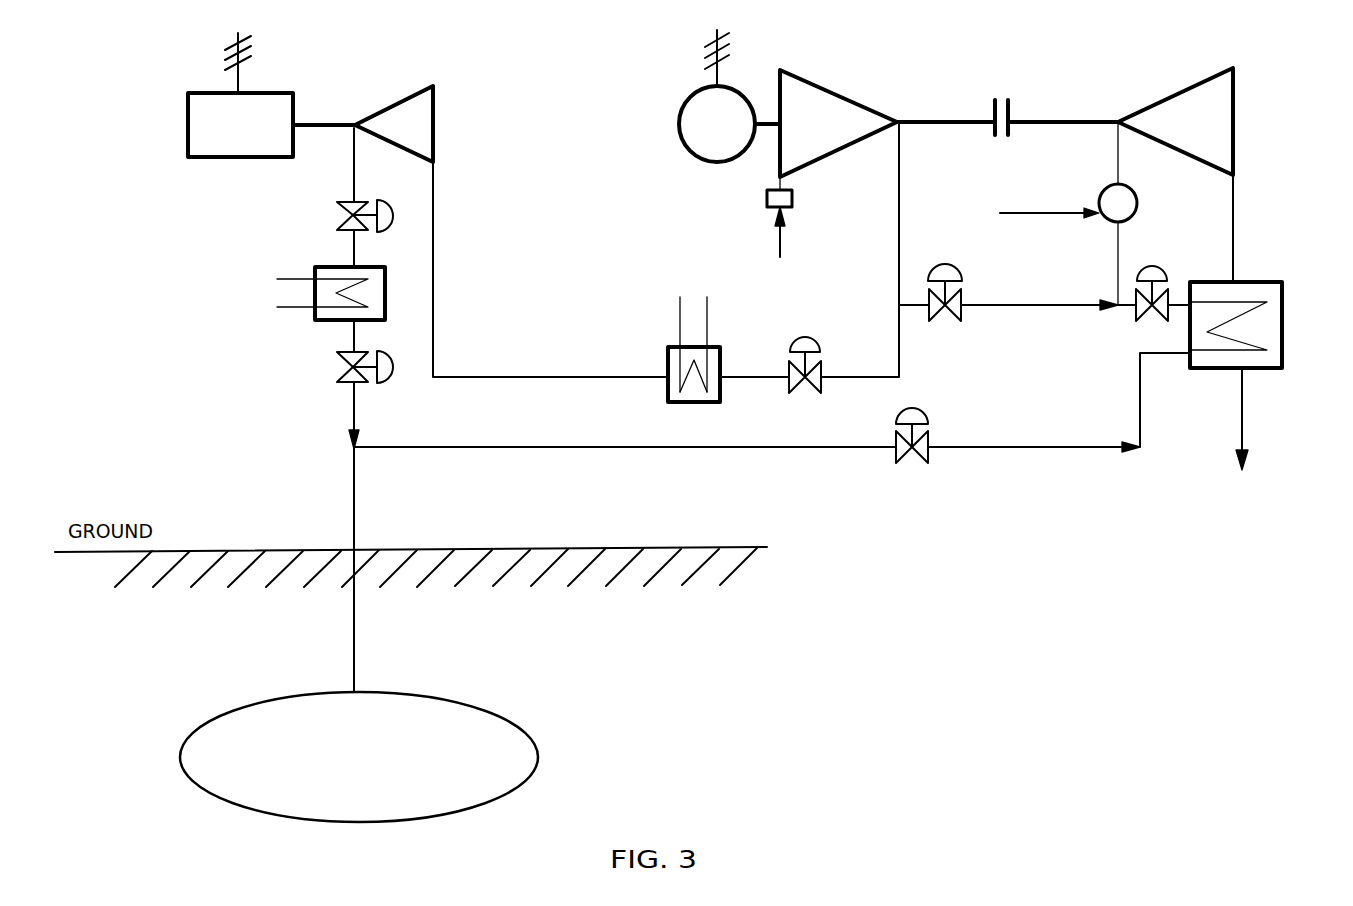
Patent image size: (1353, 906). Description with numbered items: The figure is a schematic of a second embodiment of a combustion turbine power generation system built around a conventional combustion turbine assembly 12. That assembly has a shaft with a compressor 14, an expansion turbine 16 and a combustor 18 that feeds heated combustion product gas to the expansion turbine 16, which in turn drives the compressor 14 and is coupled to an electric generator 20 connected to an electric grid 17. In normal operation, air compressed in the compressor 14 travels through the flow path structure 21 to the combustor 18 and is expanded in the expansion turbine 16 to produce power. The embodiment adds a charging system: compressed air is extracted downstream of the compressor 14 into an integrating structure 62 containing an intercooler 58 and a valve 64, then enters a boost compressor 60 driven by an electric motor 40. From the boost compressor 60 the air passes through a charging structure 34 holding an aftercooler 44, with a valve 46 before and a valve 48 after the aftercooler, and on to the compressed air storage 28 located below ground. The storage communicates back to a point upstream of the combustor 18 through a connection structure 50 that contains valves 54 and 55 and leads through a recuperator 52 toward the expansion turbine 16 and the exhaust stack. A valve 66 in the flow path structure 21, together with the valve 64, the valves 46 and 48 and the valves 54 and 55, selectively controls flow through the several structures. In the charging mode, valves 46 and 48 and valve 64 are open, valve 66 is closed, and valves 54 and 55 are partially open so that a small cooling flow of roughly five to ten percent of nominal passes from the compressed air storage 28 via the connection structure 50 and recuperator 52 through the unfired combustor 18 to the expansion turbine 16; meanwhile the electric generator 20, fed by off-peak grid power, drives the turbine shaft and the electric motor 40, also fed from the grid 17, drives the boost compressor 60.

The combustion turbine assembly 12 is at (1008, 82).
The compressor 14 is at (848, 113).
The expansion turbine 16 is at (1190, 118).
The electric grid 17 is at (260, 43).
The combustor 18 is at (1112, 230).
The electric generator 20 is at (685, 100).
The flow path structure 21 is at (1073, 308).
The compressed air storage 28 is at (517, 758).
The charging structure 34 is at (352, 408).
The electric motor 40 is at (218, 162).
The aftercooler 44 is at (315, 272).
The valve 46 is at (345, 205).
The valve 48 is at (378, 387).
The connection structure 50 is at (503, 447).
The recuperator 52 is at (1273, 325).
The valve 54 is at (1155, 263).
The valve 55 is at (915, 412).
The intercooler 58 is at (668, 345).
The boost compressor 60 is at (435, 122).
The integrating structure 62 is at (433, 253).
The valve 64 is at (810, 347).
The valve 66 is at (960, 279).